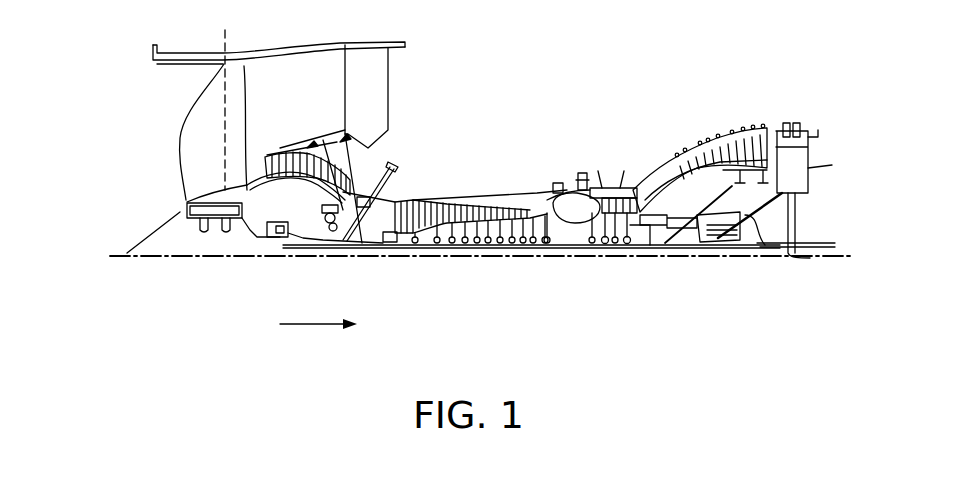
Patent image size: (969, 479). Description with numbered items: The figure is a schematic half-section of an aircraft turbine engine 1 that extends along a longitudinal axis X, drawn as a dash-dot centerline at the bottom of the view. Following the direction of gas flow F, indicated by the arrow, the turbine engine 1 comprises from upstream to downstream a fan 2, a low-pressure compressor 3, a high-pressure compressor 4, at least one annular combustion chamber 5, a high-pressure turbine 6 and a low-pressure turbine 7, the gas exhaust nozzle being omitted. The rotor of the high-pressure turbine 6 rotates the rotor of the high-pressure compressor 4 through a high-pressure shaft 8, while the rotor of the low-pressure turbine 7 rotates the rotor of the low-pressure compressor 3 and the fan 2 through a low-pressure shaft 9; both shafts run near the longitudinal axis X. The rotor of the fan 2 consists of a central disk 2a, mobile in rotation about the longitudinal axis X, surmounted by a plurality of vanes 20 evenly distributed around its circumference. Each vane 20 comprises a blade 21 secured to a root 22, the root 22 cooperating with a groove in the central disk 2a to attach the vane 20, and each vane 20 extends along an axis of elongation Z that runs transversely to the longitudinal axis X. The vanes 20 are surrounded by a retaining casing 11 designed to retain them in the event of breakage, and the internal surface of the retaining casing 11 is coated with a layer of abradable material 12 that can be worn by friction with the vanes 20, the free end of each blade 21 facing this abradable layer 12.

The aircraft turbine engine 1 is at (596, 83).
The fan 2 is at (163, 114).
The central disk 2a is at (185, 206).
The low-pressure compressor 3 is at (318, 146).
The high-pressure compressor 4 is at (443, 207).
The annular combustion chamber 5 is at (580, 203).
The high-pressure turbine 6 is at (625, 192).
The low-pressure turbine 7 is at (767, 129).
The high-pressure shaft 8 is at (647, 255).
The low-pressure shaft 9 is at (560, 254).
The retaining casing 11 is at (152, 51).
The layer of abradable material 12 is at (195, 67).
The vane 20 is at (191, 156).
The blade 21 is at (193, 142).
The root 22 is at (182, 206).
The longitudinal axis X is at (162, 258).
The axis of elongation Z is at (226, 46).
The direction of gas flow F is at (307, 326).